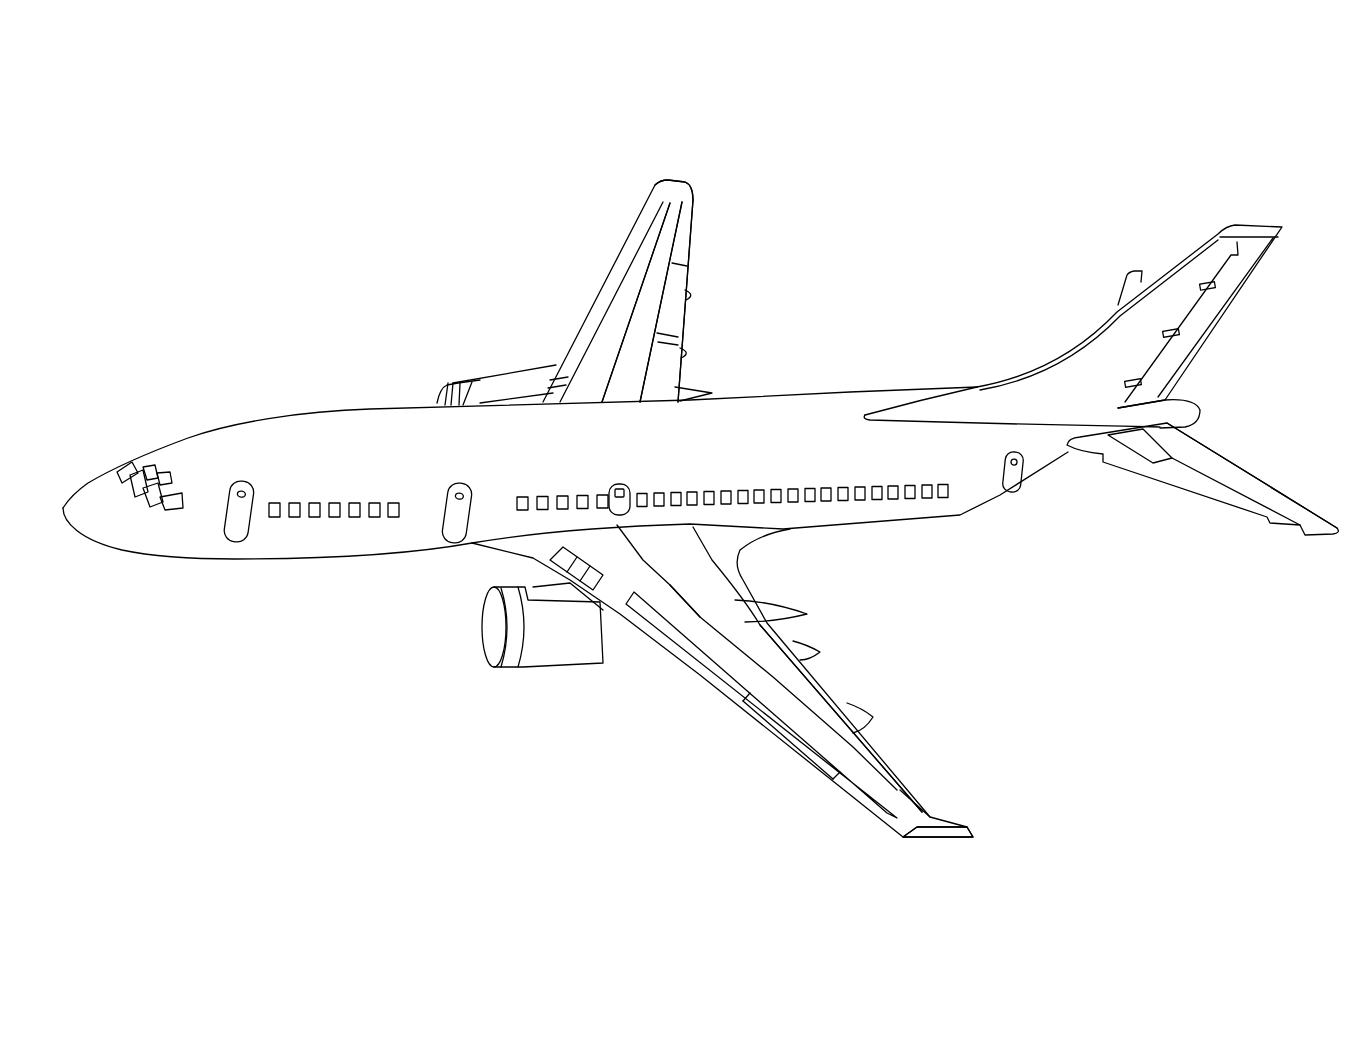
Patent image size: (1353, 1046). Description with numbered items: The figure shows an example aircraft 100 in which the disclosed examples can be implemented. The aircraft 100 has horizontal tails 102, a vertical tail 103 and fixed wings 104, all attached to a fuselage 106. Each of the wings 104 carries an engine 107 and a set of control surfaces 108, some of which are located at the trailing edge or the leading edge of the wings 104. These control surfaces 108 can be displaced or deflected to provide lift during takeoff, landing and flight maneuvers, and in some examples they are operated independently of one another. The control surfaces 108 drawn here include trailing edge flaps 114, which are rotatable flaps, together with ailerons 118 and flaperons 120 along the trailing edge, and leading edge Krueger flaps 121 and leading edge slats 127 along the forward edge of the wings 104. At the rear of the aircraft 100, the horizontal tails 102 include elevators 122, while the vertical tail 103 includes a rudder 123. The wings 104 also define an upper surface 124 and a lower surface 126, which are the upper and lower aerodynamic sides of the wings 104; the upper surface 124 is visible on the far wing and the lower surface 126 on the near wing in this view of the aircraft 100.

The aircraft 100 is at (1162, 78).
The horizontal tails 102 is at (1097, 275).
The vertical tail 103 is at (1252, 216).
The wings 104 is at (677, 160).
The fuselage 106 is at (283, 438).
The engines 107 is at (445, 380).
The control surfaces 108 is at (793, 237).
The trailing edge flaps 114 is at (685, 278).
The ailerons 118 is at (695, 230).
The flaperons 120 is at (688, 330).
The leading edge Krueger flaps 121 is at (555, 372).
The elevators 122 is at (1148, 278).
The rudder 123 is at (1230, 275).
The upper surface 124 is at (630, 280).
The lower surface 126 is at (570, 340).
The leading edge slats 127 is at (797, 742).